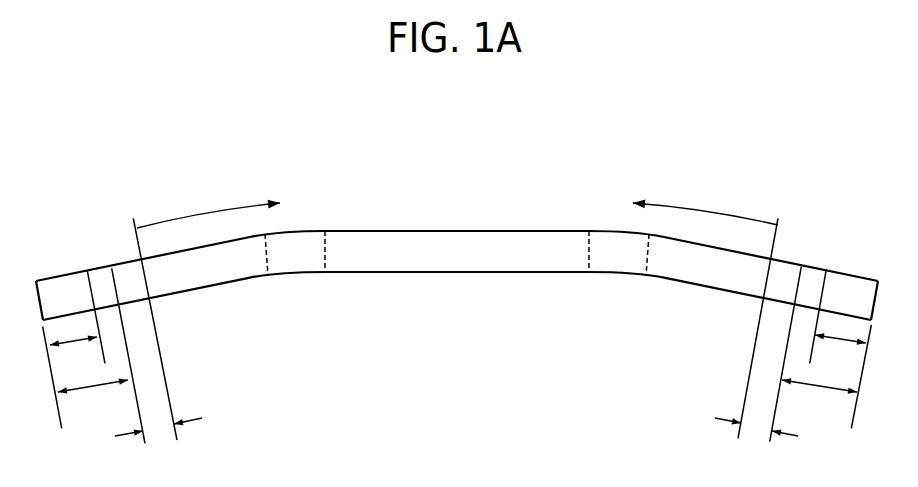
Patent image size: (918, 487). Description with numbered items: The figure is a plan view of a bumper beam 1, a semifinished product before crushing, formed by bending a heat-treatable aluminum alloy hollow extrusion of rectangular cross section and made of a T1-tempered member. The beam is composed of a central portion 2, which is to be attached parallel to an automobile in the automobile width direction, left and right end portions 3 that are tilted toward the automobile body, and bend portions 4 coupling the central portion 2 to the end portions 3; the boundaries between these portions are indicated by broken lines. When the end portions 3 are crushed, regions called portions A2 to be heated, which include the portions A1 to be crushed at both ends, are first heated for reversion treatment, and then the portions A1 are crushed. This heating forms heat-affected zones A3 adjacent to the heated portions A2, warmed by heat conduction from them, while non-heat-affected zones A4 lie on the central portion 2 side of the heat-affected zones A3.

The bumper beam 1 is at (576, 150).
The central portion 2 is at (447, 247).
The end portions 3 is at (192, 282).
The bend portions 4 is at (293, 265).
The portions to be crushed A1 is at (458, 353).
The portions to be heated A2 is at (457, 398).
The heat-affected zones A3 is at (456, 420).
The non-heat-affected zones A4 is at (457, 196).